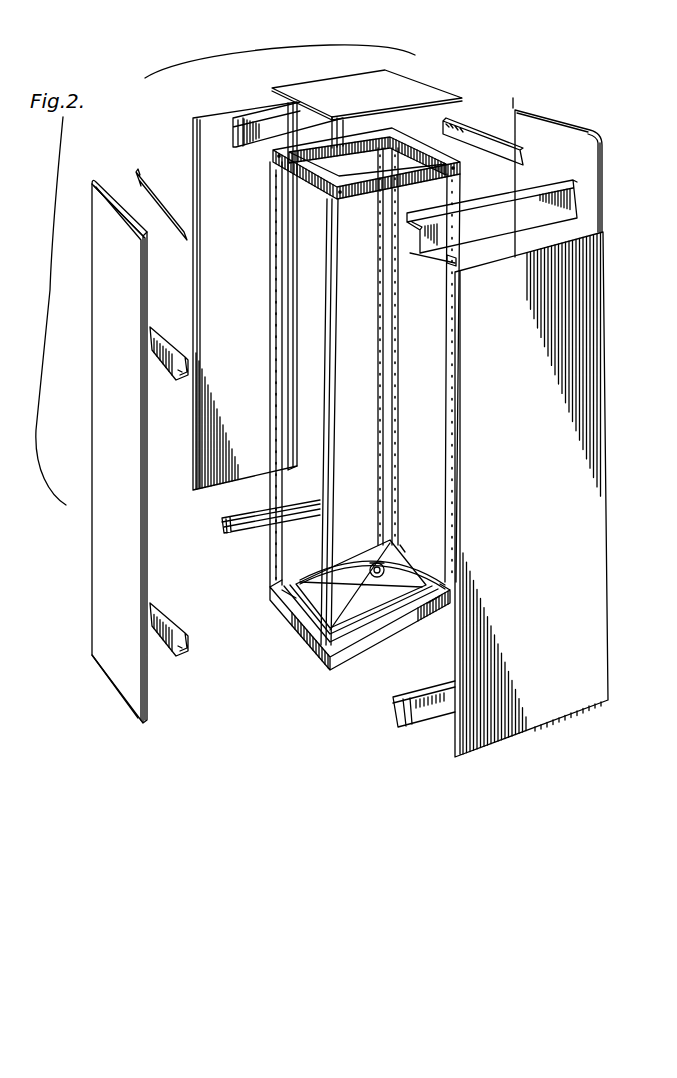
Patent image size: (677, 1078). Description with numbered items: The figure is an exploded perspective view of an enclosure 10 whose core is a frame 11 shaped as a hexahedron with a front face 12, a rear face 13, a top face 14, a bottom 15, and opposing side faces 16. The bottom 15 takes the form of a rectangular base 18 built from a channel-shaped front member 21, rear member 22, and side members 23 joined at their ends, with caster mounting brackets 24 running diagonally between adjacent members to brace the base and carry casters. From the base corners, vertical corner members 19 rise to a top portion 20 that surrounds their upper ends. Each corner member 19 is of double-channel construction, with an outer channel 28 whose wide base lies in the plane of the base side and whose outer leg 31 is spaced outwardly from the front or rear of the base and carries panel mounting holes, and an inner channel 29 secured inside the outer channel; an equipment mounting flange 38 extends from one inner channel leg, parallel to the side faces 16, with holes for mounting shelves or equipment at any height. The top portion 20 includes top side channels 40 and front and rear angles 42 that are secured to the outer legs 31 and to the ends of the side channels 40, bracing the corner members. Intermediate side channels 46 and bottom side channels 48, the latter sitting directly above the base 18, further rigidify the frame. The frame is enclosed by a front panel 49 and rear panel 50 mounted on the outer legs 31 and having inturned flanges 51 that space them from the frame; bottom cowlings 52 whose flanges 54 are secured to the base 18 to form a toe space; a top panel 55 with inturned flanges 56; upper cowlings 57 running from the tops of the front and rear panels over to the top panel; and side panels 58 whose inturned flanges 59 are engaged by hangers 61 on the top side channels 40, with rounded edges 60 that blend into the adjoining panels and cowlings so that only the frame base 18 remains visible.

The enclosure 10 is at (594, 86).
The frame 11 is at (258, 579).
The front face 12 is at (408, 601).
The rear face 13 is at (323, 150).
The top face 14 is at (380, 150).
The bottom 15 is at (375, 611).
The side faces 16 is at (407, 157).
The rectangular base 18 is at (347, 672).
The vertical corner members 19 is at (381, 316).
The top portion 20 is at (272, 157).
The front member 21 is at (385, 633).
The rear member 22 is at (338, 565).
The side members 23 is at (432, 570).
The caster mounting brackets 24 is at (368, 568).
The outer channel 28 is at (327, 382).
The inner channel 29 is at (397, 360).
The outer leg 31 is at (337, 296).
The equipment mounting flange 38 is at (447, 258).
The top side channels 40 is at (318, 188).
The front and rear angles 42 is at (368, 143).
The intermediate side channels 46 is at (166, 345).
The bottom side channels 48 is at (398, 543).
The front panel 49 is at (602, 565).
The rear panel 50 is at (201, 126).
The inturned flanges 51 is at (193, 353).
The bottom cowlings 52 is at (216, 528).
The flanges 54 is at (228, 538).
The top panel 55 is at (417, 90).
The inturned flanges 56 is at (436, 107).
The upper cowlings 57 is at (255, 120).
The side panels 58 is at (107, 393).
The inturned flanges 59 is at (542, 128).
The rounded edges 60 is at (109, 188).
The hangers 61 is at (158, 205).